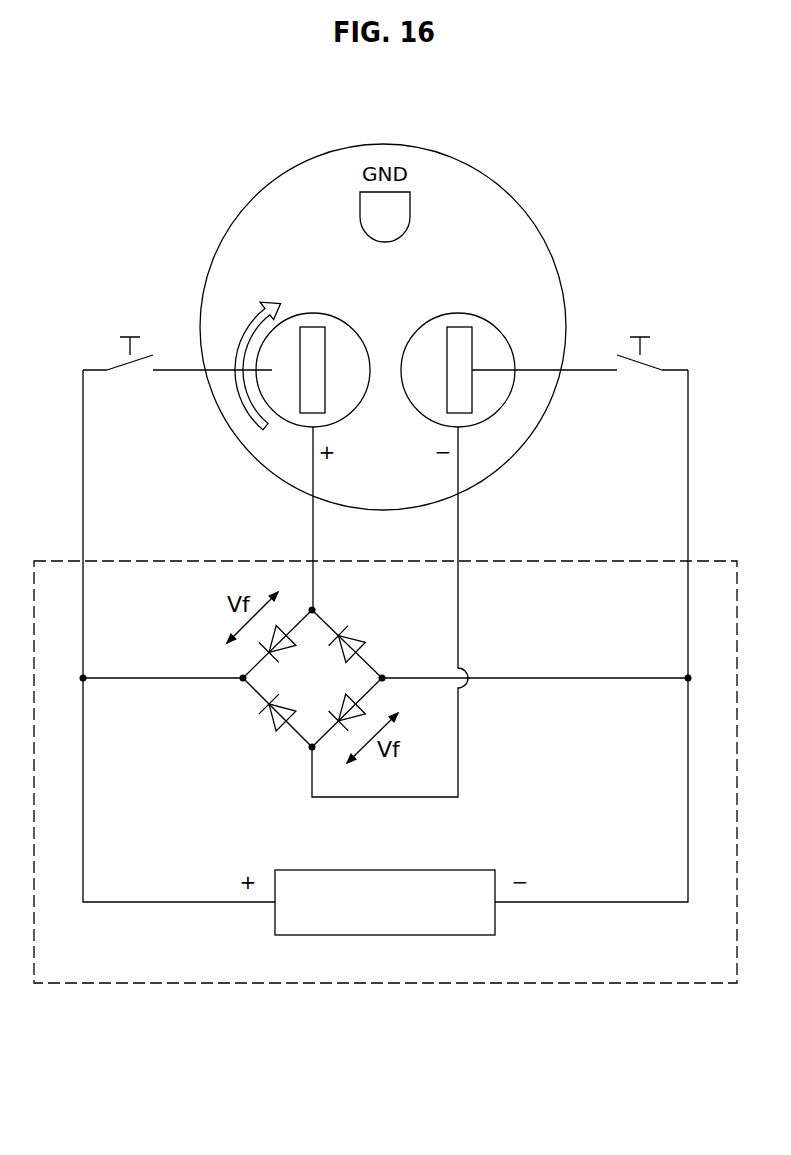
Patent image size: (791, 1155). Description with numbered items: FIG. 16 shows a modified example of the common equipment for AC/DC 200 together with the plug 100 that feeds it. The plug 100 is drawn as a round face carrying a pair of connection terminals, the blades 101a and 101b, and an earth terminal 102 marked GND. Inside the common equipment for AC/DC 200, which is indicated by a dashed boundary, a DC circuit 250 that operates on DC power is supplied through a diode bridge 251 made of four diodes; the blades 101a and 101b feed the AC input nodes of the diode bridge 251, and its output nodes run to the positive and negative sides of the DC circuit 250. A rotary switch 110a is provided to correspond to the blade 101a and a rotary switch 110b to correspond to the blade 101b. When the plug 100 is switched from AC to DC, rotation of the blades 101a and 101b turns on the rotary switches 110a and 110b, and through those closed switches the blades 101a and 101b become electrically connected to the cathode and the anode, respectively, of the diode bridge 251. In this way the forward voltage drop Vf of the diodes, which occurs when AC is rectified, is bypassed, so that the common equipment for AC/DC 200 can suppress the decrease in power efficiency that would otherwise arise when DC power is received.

The plug 100 is at (468, 127).
The earth terminal 102 is at (410, 200).
The blade 101a is at (325, 395).
The blade 101b is at (472, 388).
The rotary switch 110a is at (136, 375).
The rotary switch 110b is at (633, 373).
The common equipment for AC/DC 200 is at (595, 558).
The DC circuit 250 is at (402, 868).
The diode bridge 251 is at (248, 728).